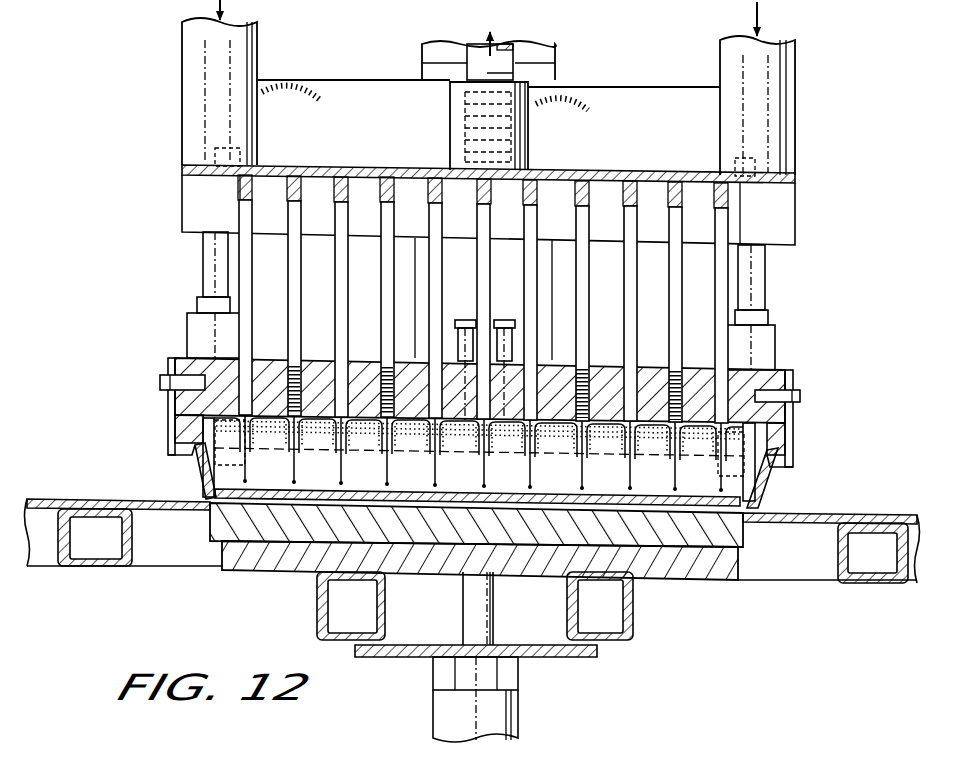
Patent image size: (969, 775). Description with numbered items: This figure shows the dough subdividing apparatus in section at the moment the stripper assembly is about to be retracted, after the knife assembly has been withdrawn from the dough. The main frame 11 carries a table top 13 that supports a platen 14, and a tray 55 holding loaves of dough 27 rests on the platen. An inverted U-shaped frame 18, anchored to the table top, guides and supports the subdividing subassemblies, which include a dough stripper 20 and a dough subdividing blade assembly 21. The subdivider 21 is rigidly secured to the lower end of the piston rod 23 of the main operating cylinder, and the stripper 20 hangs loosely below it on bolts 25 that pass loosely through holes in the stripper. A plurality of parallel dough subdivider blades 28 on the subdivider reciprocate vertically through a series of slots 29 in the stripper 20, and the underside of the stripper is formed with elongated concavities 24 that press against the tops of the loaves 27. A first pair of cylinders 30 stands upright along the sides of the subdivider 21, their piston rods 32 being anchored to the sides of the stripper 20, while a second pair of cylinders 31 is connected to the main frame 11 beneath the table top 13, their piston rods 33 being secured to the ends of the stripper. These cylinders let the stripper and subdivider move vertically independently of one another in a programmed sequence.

The main frame 11 is at (86, 568).
The table top 13 is at (800, 515).
The platen 14 is at (745, 542).
The inverted U-shaped frame 18 is at (555, 66).
The dough stripper 20 is at (786, 366).
The dough subdividing blade assembly 21 is at (776, 176).
The piston rod 23 is at (467, 63).
The elongated concavities 24 is at (318, 420).
The bolts 25 is at (236, 196).
The loaf of dough 27 is at (424, 479).
The dough subdivider blades 28 is at (389, 176).
The slots 29 is at (290, 362).
The first pair of cylinders 30 is at (182, 42).
The second pair of cylinders 31 is at (519, 713).
The piston rods 32 is at (203, 278).
The piston rods 33 is at (494, 618).
The tray 55 is at (194, 468).